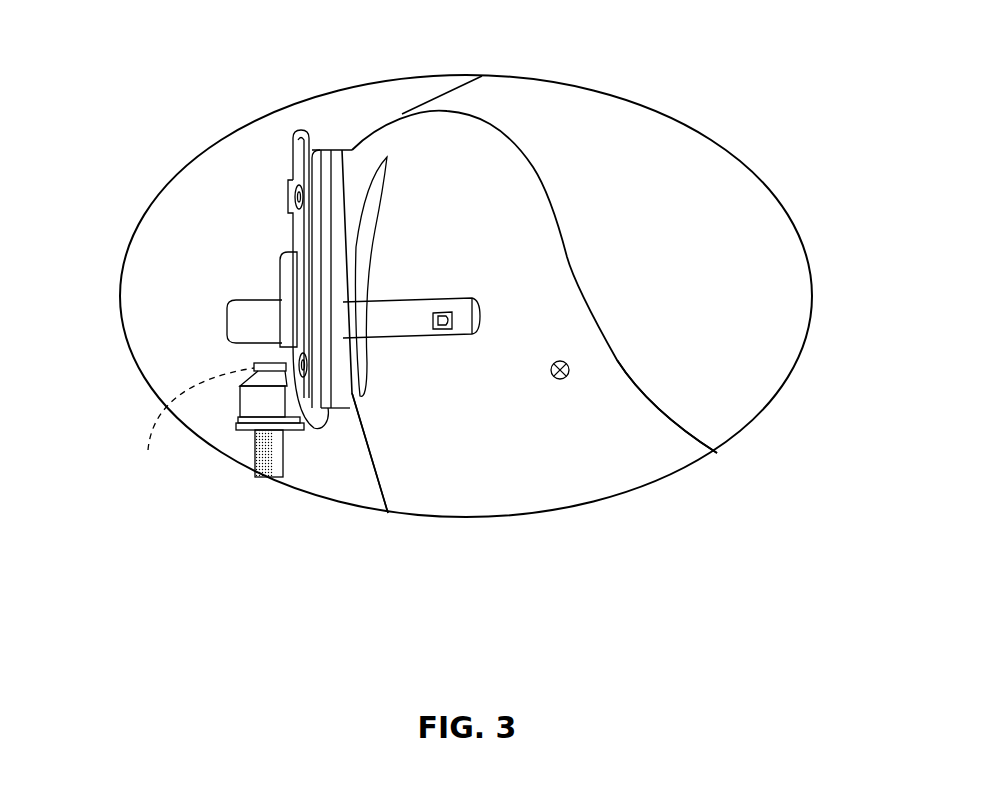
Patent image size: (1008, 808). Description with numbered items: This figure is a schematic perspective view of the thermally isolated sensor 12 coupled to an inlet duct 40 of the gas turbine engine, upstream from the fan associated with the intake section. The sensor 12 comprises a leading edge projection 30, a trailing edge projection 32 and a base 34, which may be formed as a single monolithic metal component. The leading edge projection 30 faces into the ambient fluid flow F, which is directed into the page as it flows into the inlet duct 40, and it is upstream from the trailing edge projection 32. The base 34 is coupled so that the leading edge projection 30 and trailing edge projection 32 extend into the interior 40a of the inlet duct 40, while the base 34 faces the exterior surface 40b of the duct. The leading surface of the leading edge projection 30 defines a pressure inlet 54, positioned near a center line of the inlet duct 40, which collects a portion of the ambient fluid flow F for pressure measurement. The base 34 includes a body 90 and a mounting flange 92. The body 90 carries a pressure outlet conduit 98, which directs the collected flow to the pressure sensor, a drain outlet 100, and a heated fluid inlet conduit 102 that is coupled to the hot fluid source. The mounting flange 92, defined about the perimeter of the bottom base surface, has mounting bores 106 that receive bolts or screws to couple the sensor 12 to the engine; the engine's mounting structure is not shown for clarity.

The thermally isolated sensor 12 is at (197, 157).
The leading edge projection 30 is at (430, 288).
The trailing edge projection 32 is at (462, 352).
The base 34 is at (340, 143).
The inlet duct 40 is at (404, 98).
The interior 40a is at (405, 497).
The exterior surface 40b is at (372, 483).
The pressure inlet 54 is at (445, 332).
The body 90 is at (355, 123).
The mounting flange 92 is at (306, 118).
The pressure outlet conduit 98 is at (193, 425).
The drain outlet 100 is at (248, 322).
The heated fluid inlet conduit 102 is at (248, 400).
The mounting bores 106 is at (294, 196).
The ambient fluid flow F is at (560, 361).